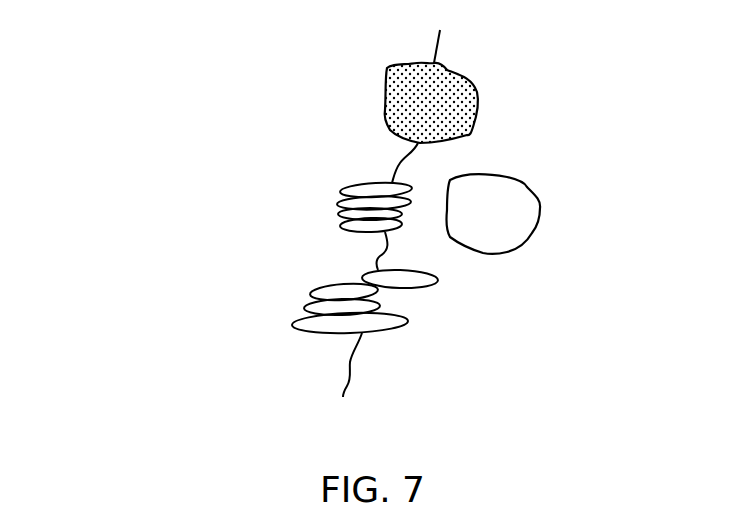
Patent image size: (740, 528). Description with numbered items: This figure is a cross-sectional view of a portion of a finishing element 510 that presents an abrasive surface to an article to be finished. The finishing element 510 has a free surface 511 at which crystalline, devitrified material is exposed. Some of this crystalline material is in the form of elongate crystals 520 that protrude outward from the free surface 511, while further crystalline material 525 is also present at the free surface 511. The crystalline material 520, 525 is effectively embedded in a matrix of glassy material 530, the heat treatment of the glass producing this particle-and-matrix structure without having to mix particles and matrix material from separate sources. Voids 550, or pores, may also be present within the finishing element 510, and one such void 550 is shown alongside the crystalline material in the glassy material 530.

The finishing element 510 is at (170, 267).
The free surface 511 is at (350, 362).
The elongate crystals 520 is at (337, 192).
The crystalline material 525 is at (387, 115).
The glassy material 530 is at (518, 324).
The voids 550 is at (540, 208).